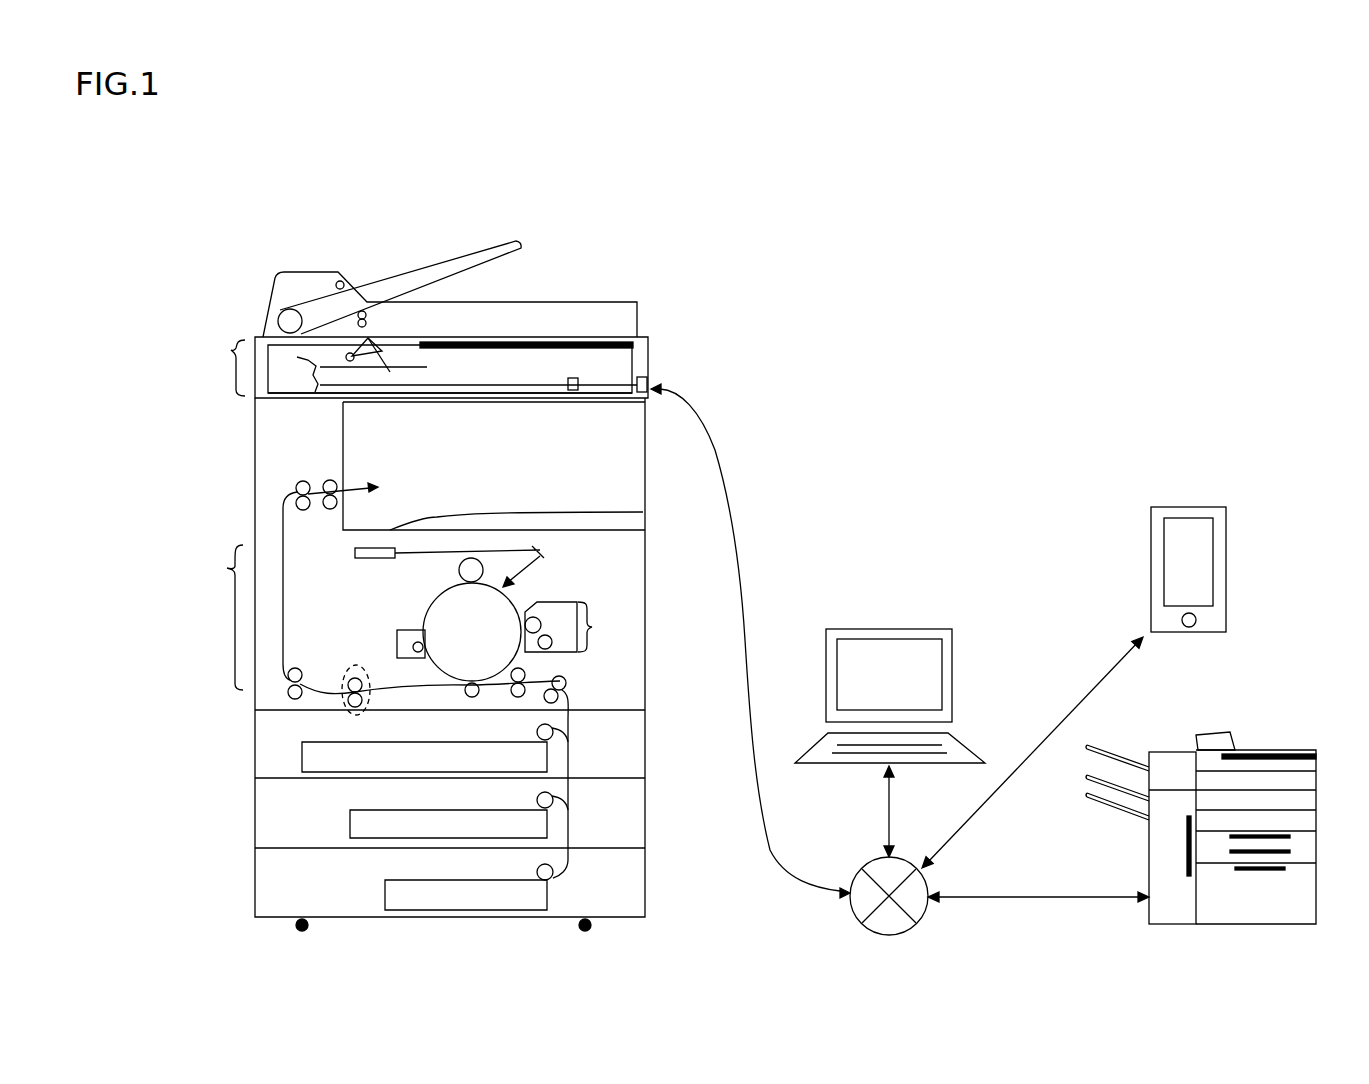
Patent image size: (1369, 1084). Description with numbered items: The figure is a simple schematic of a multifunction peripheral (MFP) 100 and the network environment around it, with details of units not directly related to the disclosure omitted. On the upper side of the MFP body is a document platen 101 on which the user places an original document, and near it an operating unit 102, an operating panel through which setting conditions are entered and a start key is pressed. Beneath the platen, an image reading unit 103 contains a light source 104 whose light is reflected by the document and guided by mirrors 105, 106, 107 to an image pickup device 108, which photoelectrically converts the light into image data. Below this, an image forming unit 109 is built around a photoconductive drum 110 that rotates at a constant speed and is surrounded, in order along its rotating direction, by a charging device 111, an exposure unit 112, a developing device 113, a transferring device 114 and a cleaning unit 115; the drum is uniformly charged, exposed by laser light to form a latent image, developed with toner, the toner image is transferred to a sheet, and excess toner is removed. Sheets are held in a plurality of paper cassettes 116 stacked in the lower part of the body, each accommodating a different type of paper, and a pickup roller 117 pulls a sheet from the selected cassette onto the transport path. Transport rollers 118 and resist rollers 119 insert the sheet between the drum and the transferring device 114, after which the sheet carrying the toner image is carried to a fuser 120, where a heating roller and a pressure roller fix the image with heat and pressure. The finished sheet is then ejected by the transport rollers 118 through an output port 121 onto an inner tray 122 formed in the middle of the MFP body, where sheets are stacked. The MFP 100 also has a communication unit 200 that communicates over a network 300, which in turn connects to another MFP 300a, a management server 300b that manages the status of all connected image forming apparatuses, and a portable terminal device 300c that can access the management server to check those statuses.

The multifunction peripheral 100 is at (499, 525).
The document platen 101 is at (532, 338).
The operating unit 102 is at (607, 340).
The image reading unit 103 is at (212, 365).
The light source 104 is at (392, 340).
The mirror 105 is at (390, 372).
The mirror 106 is at (297, 357).
The mirror 107 is at (313, 394).
The image pickup device 108 is at (577, 378).
The communication unit 200 is at (648, 375).
The image forming unit 109 is at (374, 685).
The photoconductive drum 110 is at (436, 613).
The charging device 111 is at (460, 568).
The exposure unit 112 is at (355, 555).
The developing device 113 is at (581, 625).
The transferring device 114 is at (465, 696).
The cleaning unit 115 is at (397, 635).
The paper cassettes 116 is at (308, 762).
The pickup roller 117 is at (553, 731).
The transport rollers 118 is at (285, 673).
The resist rollers 119 is at (516, 694).
The fuser 120 is at (340, 703).
The output port 121 is at (340, 483).
The inner tray 122 is at (437, 517).
The network 300 is at (868, 875).
The another MFP 300a is at (1230, 733).
The management server 300b is at (918, 627).
The portable terminal device 300c is at (1192, 508).